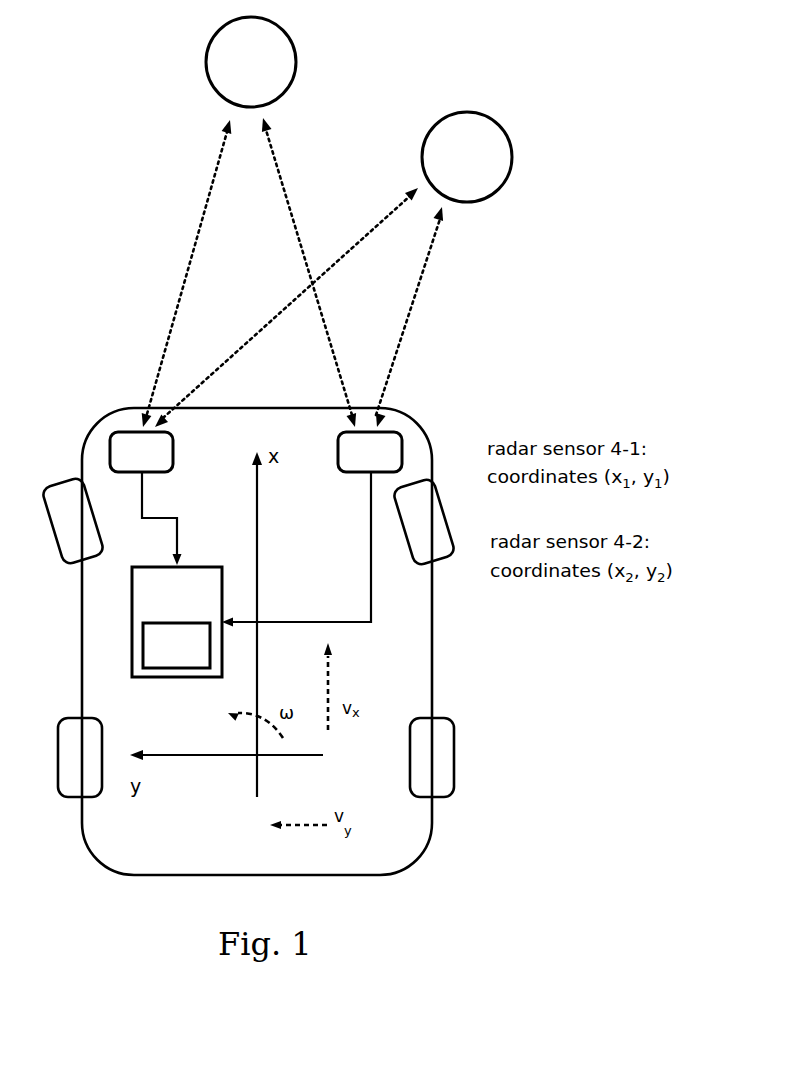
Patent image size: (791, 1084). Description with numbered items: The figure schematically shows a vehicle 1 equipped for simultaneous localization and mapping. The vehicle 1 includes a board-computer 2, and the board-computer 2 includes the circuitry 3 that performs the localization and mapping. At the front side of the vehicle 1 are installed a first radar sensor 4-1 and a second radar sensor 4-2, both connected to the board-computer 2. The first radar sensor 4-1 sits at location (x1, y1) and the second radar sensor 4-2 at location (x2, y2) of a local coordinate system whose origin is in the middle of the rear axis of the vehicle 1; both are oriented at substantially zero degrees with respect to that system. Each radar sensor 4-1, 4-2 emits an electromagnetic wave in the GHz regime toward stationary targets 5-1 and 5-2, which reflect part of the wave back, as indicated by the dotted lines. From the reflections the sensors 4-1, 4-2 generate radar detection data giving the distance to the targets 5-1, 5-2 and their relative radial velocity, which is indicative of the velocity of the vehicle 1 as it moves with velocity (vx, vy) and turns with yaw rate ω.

The vehicle 1 is at (82, 653).
The board-computer 2 is at (177, 622).
The circuitry 3 is at (176, 645).
The first radar sensor 4-1 is at (370, 452).
The second radar sensor 4-2 is at (141, 452).
The target 5-1 is at (467, 157).
The target 5-2 is at (251, 62).